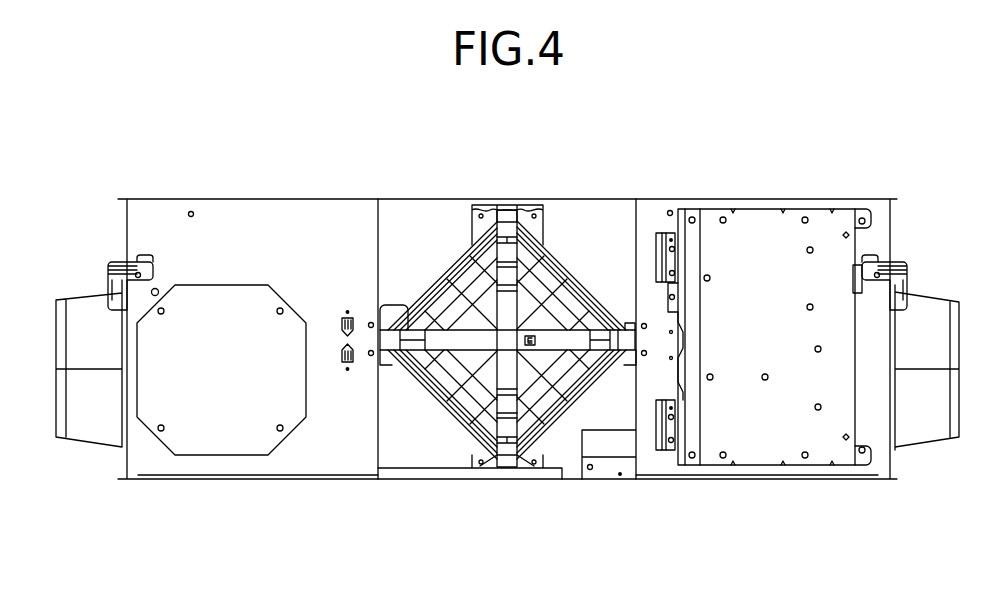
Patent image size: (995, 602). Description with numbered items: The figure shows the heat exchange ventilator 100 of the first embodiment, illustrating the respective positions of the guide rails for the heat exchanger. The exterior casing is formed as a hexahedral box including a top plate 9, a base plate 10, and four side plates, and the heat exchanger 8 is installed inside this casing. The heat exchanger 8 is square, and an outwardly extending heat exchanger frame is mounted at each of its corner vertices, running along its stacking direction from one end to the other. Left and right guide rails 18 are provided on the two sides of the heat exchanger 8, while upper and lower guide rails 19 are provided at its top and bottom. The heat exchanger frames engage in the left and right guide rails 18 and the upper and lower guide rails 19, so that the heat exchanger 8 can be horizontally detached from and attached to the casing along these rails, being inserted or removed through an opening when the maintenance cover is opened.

The ventilation device 100 is at (237, 167).
The top plate 9 is at (328, 199).
The heat exchanger 8 is at (472, 295).
The upper and lower guide rails 19 is at (540, 204).
The left and right guide rails 18 is at (627, 318).
The base plate 10 is at (613, 480).